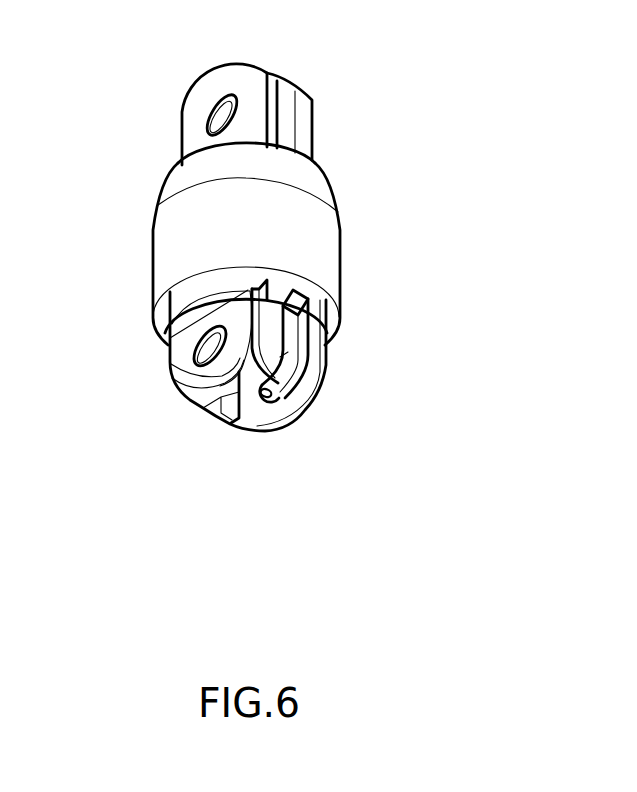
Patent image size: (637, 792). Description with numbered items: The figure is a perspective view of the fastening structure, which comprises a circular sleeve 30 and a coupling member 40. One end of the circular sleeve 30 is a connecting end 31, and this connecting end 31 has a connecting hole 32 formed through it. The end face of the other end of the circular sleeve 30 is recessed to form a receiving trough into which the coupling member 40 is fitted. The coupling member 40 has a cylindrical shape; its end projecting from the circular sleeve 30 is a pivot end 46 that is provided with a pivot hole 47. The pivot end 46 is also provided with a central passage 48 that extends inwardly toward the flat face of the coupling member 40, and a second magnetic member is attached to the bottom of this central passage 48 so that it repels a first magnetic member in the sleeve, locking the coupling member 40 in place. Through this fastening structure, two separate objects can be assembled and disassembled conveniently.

The circular sleeve 30 is at (328, 190).
The connecting end 31 is at (307, 110).
The connecting hole 32 is at (224, 105).
The coupling member 40 is at (325, 338).
The pivot end 46 is at (322, 385).
The pivot hole 47 is at (212, 355).
The central passage 48 is at (252, 400).